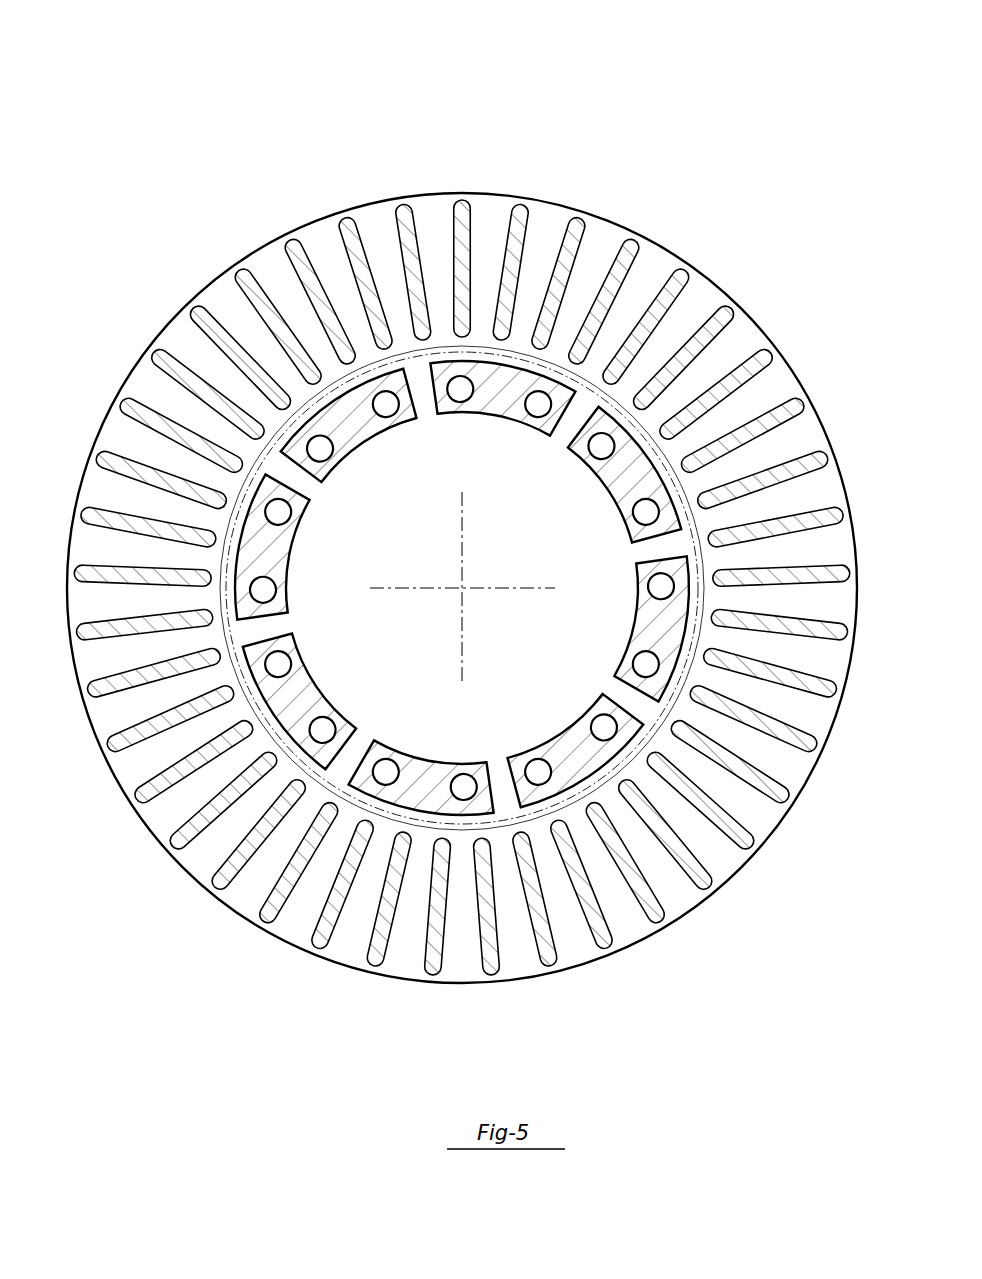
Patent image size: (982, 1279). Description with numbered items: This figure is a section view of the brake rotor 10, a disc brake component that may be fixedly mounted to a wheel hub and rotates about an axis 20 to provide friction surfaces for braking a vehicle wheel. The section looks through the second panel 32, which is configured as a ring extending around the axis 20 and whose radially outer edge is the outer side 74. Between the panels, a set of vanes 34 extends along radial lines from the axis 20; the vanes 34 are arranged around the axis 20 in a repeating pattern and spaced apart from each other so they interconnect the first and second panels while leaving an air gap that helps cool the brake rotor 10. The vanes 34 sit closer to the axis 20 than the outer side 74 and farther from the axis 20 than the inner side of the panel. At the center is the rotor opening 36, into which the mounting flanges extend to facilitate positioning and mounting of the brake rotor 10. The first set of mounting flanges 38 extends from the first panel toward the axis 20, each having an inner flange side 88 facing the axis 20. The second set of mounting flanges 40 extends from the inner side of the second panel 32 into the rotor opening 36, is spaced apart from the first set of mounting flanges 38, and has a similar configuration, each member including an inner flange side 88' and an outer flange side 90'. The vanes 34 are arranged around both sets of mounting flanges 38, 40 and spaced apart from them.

The brake rotor 10 is at (236, 209).
The second panel 32 is at (498, 193).
The outer side 74 is at (342, 211).
The set of vanes 34 is at (731, 309).
The outer flange side 90' is at (473, 582).
The first set of mounting flanges 38 is at (512, 396).
The second set of mounting flanges 40 is at (352, 432).
The inner flange side 88' is at (381, 459).
The inner flange side 88 is at (501, 448).
The axis 20 is at (468, 583).
The rotor opening 36 is at (425, 636).